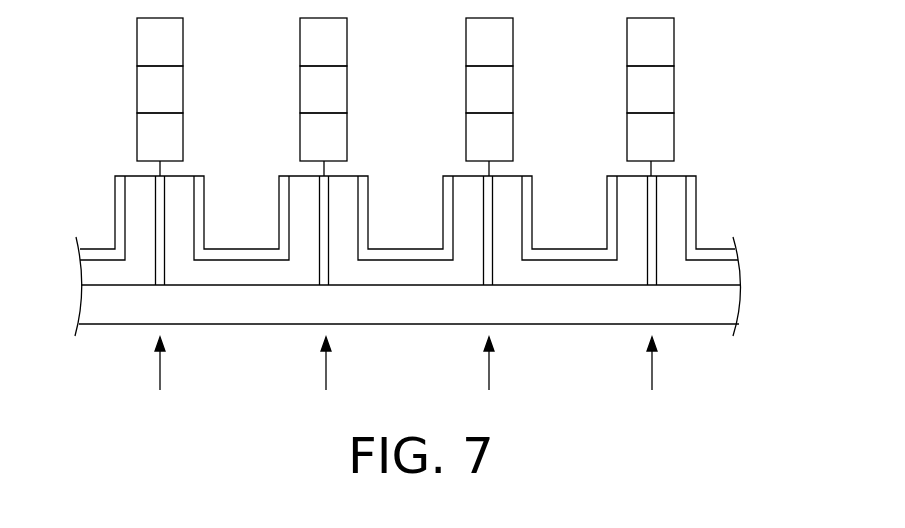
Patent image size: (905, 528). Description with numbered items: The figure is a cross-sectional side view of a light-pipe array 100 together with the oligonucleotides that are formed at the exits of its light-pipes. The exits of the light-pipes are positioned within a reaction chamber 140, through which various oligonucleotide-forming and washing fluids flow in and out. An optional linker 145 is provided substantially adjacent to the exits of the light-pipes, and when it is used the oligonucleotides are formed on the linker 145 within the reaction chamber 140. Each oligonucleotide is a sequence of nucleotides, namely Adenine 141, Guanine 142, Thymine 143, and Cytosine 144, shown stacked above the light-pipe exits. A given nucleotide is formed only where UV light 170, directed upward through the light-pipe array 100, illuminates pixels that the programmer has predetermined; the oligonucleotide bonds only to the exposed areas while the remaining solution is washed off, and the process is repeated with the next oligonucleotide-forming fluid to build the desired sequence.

The light-pipe array 100 is at (777, 175).
The reaction chamber 140 is at (777, 18).
The Adenine 141 is at (147, 127).
The Guanine 142 is at (147, 87).
The Thymine 143 is at (147, 42).
The Cytosine 144 is at (311, 43).
The linker 145 is at (158, 171).
The UV light 170 is at (156, 365).